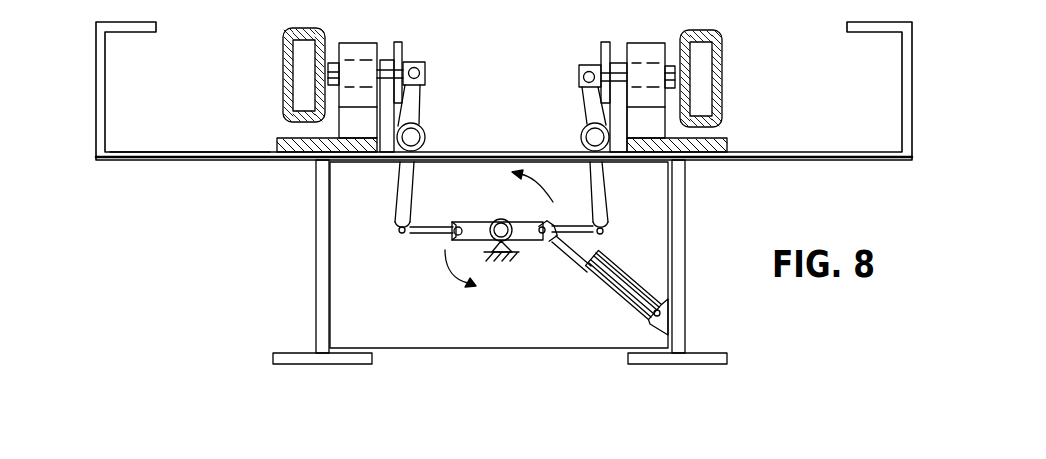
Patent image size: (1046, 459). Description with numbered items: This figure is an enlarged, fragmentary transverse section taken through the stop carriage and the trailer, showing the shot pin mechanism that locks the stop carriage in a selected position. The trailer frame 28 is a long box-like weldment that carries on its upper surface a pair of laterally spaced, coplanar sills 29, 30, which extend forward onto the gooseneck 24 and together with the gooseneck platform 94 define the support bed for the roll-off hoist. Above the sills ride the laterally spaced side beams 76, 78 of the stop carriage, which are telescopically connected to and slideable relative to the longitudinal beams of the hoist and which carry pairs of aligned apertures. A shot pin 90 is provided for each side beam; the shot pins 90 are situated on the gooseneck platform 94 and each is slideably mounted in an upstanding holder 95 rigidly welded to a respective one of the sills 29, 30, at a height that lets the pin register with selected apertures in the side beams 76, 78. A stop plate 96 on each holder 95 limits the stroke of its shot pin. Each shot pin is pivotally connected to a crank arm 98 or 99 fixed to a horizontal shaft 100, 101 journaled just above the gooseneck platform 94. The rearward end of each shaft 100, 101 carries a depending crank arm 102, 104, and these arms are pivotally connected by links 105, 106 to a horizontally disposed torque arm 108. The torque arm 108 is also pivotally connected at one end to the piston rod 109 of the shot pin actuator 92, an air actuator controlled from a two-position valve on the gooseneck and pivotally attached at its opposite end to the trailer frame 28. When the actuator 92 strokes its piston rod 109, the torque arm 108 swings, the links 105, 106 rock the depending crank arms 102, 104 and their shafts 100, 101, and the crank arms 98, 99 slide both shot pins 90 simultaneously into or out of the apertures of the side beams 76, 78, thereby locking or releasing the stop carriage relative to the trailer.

The gooseneck 24 is at (97, 109).
The trailer frame 28 is at (314, 243).
The sill 29 is at (273, 144).
The sill 30 is at (727, 143).
The side beam 76 is at (283, 45).
The side beam 78 is at (721, 60).
The shot pin 90 is at (384, 62).
The shot pin actuator 92 is at (637, 290).
The gooseneck platform 94 is at (178, 146).
The holder 95 is at (361, 45).
The stop plate 96 is at (401, 53).
The crank arm 98 is at (412, 110).
The crank arm 99 is at (588, 98).
The horizontal shaft 100 is at (413, 137).
The horizontal shaft 101 is at (595, 137).
The depending crank arm 102 is at (405, 205).
The depending crank arm 104 is at (601, 195).
The link 105 is at (427, 233).
The link 106 is at (573, 226).
The torque arm 108 is at (527, 238).
The piston rod 109 is at (577, 265).